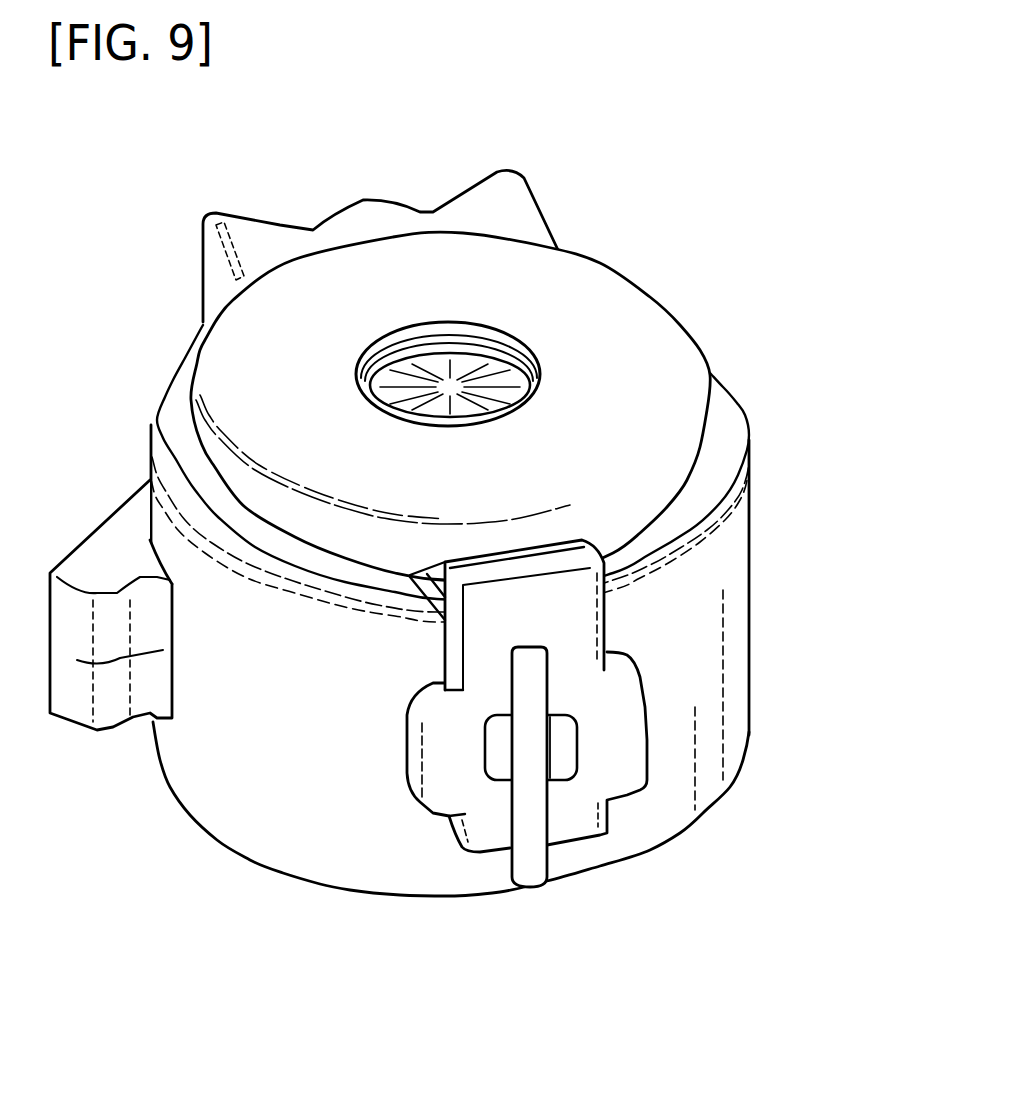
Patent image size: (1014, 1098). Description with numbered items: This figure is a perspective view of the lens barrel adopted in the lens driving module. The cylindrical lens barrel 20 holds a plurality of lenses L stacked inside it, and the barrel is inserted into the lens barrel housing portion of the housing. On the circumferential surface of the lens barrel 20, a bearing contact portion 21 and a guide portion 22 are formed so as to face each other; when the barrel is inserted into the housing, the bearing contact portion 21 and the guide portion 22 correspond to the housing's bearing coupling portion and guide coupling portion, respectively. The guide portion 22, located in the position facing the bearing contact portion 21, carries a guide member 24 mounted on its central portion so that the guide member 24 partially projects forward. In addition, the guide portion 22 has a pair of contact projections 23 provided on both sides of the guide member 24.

The lens barrel 20 is at (653, 403).
The bearing contact portion 21 is at (376, 214).
The guide portion 22 is at (573, 627).
The contact projections 23 is at (620, 737).
The guide member 24 is at (525, 813).
The lenses L is at (517, 363).